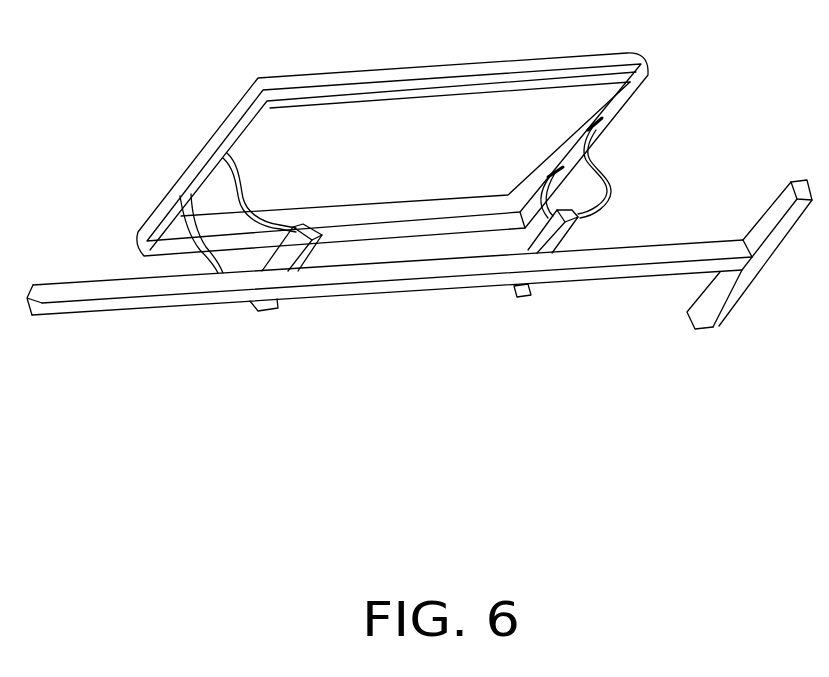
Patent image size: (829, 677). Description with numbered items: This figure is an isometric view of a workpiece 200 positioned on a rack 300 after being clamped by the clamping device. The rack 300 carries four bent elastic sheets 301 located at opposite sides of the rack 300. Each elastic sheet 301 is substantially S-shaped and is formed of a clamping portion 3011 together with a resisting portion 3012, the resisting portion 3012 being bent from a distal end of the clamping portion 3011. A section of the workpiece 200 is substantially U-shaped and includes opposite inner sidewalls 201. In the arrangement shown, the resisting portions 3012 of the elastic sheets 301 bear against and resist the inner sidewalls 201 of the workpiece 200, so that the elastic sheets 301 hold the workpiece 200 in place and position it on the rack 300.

The workpiece 200 is at (436, 135).
The inner sidewalls 201 is at (628, 88).
The rack 300 is at (610, 258).
The elastic sheets 301 is at (479, 214).
The clamping portion 3011 is at (605, 179).
The resisting portion 3012 is at (592, 144).